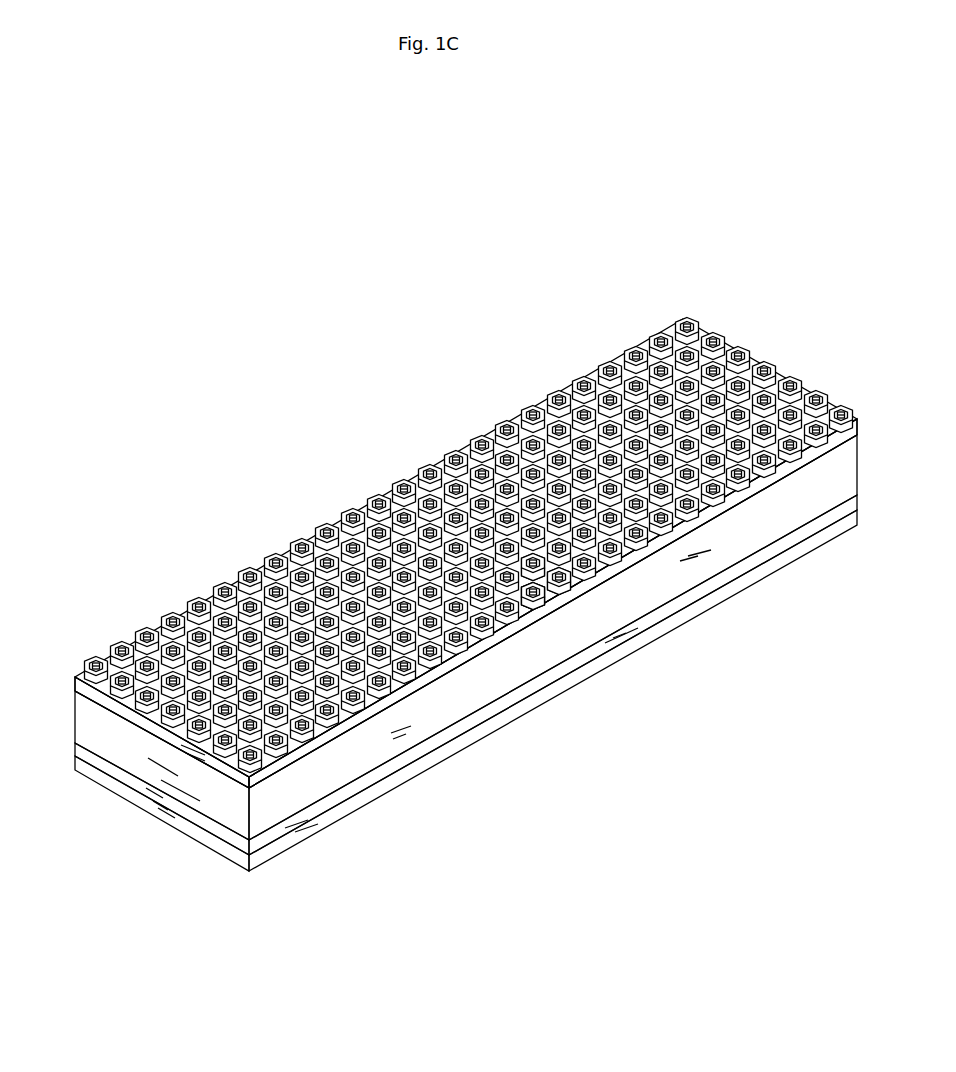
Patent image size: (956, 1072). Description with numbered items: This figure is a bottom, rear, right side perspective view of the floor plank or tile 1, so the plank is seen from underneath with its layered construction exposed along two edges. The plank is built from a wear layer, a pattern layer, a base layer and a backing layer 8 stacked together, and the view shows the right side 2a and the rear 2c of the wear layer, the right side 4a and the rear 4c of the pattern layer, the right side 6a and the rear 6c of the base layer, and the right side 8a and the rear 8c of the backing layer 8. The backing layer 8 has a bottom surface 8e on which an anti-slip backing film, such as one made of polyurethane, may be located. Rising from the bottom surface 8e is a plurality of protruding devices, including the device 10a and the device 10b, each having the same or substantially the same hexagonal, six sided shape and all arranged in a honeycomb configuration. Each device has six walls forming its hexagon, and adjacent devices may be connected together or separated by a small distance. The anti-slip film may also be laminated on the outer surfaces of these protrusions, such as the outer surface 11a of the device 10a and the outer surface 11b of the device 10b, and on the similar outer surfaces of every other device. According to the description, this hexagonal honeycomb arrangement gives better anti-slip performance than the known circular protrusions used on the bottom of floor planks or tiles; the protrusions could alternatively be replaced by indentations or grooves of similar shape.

The floor plank or tile 1 is at (426, 292).
The right side of wear layer 2a is at (455, 735).
The rear of wear layer 2c is at (213, 842).
The right side of pattern layer 4a is at (403, 750).
The rear of pattern layer 4c is at (210, 823).
The right side of base layer 6a is at (352, 748).
The rear of base layer 6c is at (210, 791).
The backing layer 8 is at (447, 658).
The right side of backing layer 8a is at (323, 732).
The rear of backing layer 8c is at (146, 722).
The bottom surface of backing layer 8e is at (465, 637).
The protruding device or member 10a is at (523, 592).
The protruding device or member 10b is at (548, 574).
The outer surface of device 10a 11a is at (532, 582).
The outer surface of device 10b 11b is at (548, 562).